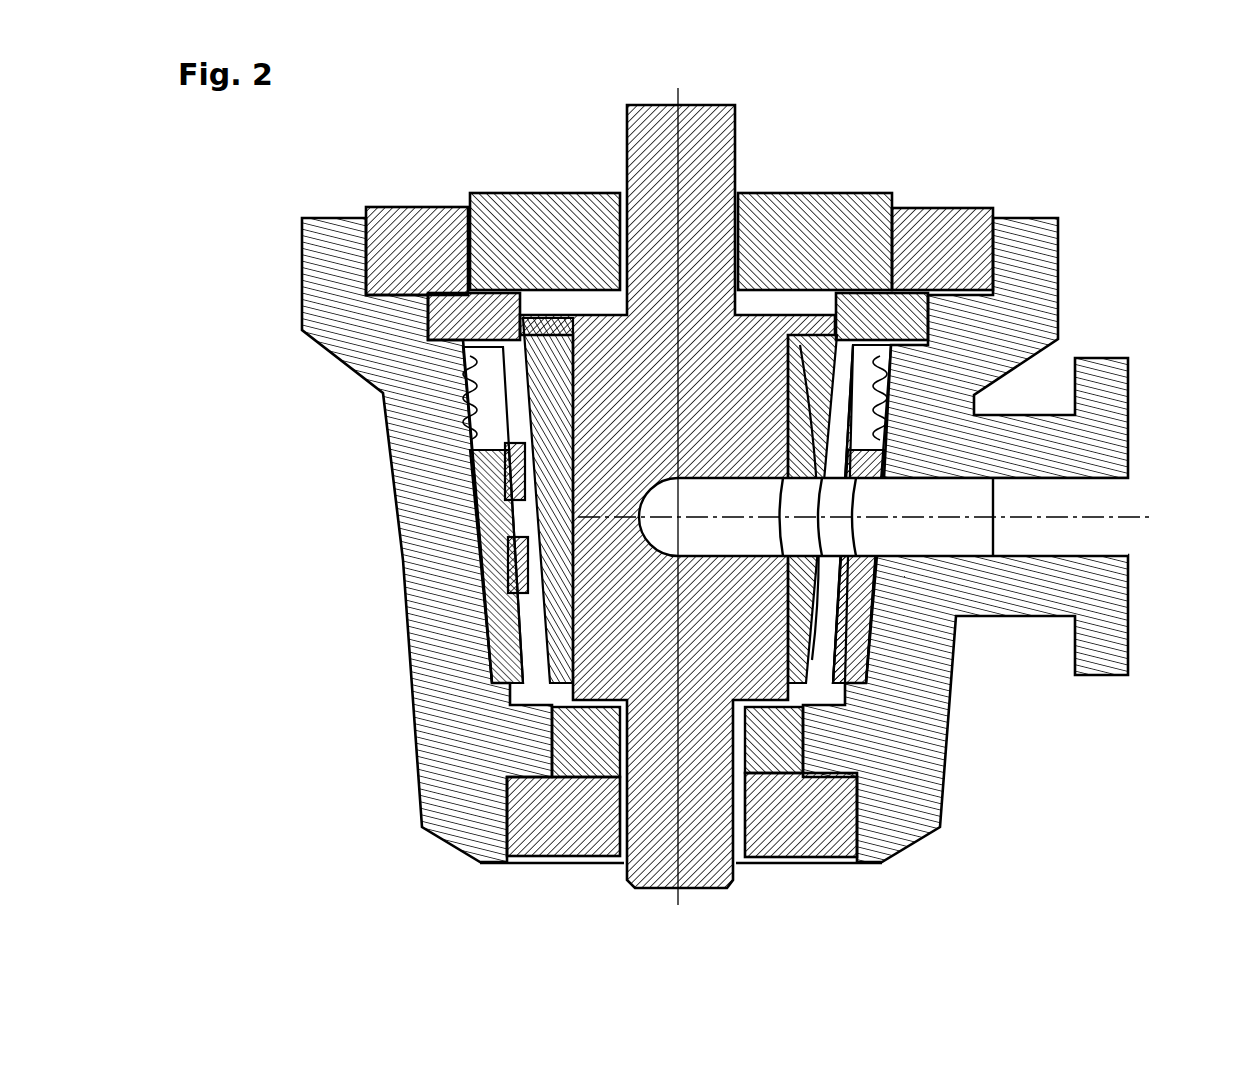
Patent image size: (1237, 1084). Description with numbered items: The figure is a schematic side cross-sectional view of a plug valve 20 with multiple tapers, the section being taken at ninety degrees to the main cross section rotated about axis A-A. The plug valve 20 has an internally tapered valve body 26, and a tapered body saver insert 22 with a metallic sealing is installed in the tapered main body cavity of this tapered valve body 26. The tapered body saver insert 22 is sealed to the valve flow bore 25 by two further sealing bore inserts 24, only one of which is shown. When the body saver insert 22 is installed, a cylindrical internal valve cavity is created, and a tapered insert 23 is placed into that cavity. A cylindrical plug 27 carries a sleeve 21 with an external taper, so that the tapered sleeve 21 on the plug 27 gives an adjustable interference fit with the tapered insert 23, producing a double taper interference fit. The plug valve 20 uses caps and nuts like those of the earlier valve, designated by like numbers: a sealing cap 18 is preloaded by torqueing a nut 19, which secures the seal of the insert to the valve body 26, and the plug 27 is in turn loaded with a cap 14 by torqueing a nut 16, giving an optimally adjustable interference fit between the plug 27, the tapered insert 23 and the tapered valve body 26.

The cap 14 is at (787, 218).
The nut 16 is at (922, 238).
The sealing cap 18 is at (840, 865).
The nut 19 is at (765, 825).
The plug valve 20 is at (1161, 189).
The tapered sleeve 21 is at (538, 397).
The tapered body saver insert 22 is at (490, 470).
The tapered insert 23 is at (520, 575).
The sealing bore insert 24 is at (885, 568).
The valve flow bore 25 is at (903, 532).
The tapered valve body 26 is at (1060, 275).
The cylindrical plug 27 is at (706, 207).